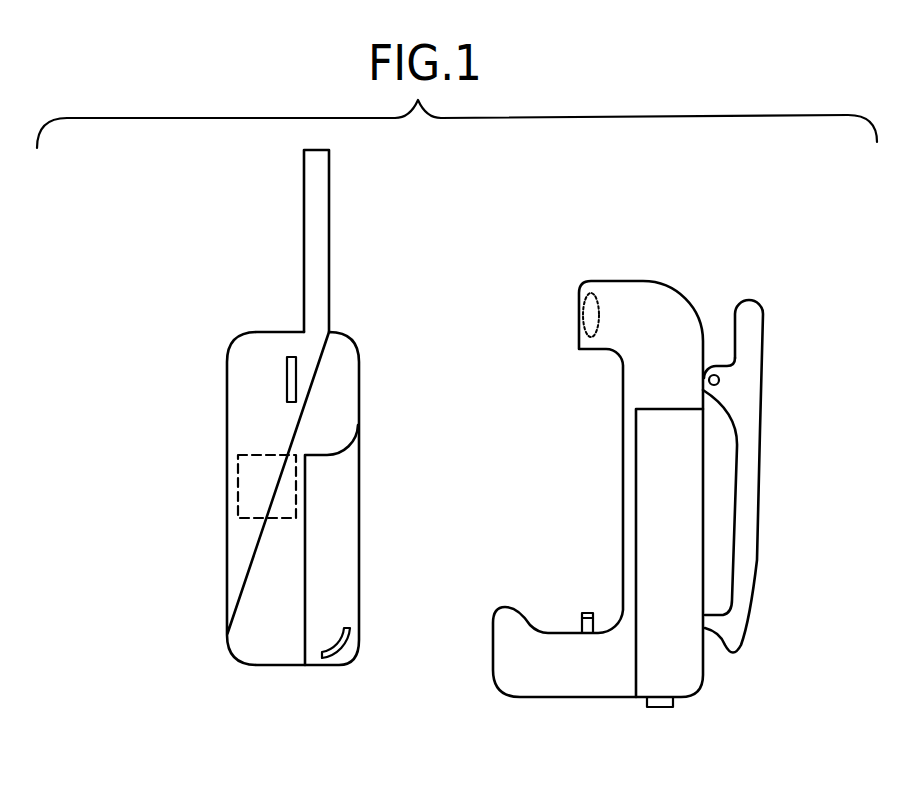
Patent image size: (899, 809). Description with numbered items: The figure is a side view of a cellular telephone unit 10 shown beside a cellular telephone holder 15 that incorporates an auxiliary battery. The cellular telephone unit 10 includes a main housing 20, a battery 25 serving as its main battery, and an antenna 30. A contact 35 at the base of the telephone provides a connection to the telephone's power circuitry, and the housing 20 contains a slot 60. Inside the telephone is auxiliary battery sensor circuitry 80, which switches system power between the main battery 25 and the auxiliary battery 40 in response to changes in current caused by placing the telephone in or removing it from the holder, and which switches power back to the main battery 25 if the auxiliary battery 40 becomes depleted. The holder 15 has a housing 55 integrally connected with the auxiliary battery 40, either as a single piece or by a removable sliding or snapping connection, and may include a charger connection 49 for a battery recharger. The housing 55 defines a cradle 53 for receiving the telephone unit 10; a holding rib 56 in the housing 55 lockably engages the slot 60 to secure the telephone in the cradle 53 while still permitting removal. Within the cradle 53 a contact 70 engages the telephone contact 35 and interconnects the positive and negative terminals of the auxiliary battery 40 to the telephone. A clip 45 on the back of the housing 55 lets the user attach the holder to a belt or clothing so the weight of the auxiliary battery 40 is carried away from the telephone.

The cellular telephone unit 10 is at (150, 348).
The cellular telephone holder 15 is at (724, 236).
The main housing 20 is at (252, 571).
The battery 25 is at (323, 602).
The antenna 30 is at (322, 237).
The contact 35 is at (334, 660).
The auxiliary battery 40 is at (680, 565).
The clip 45 is at (750, 405).
The charger connection 49 is at (660, 709).
The cradle 53 is at (543, 633).
The housing 55 is at (672, 310).
The holding rib 56 is at (600, 325).
The slot 60 is at (285, 377).
The contact 70 is at (582, 622).
The auxiliary battery sensor circuitry 80 is at (258, 478).